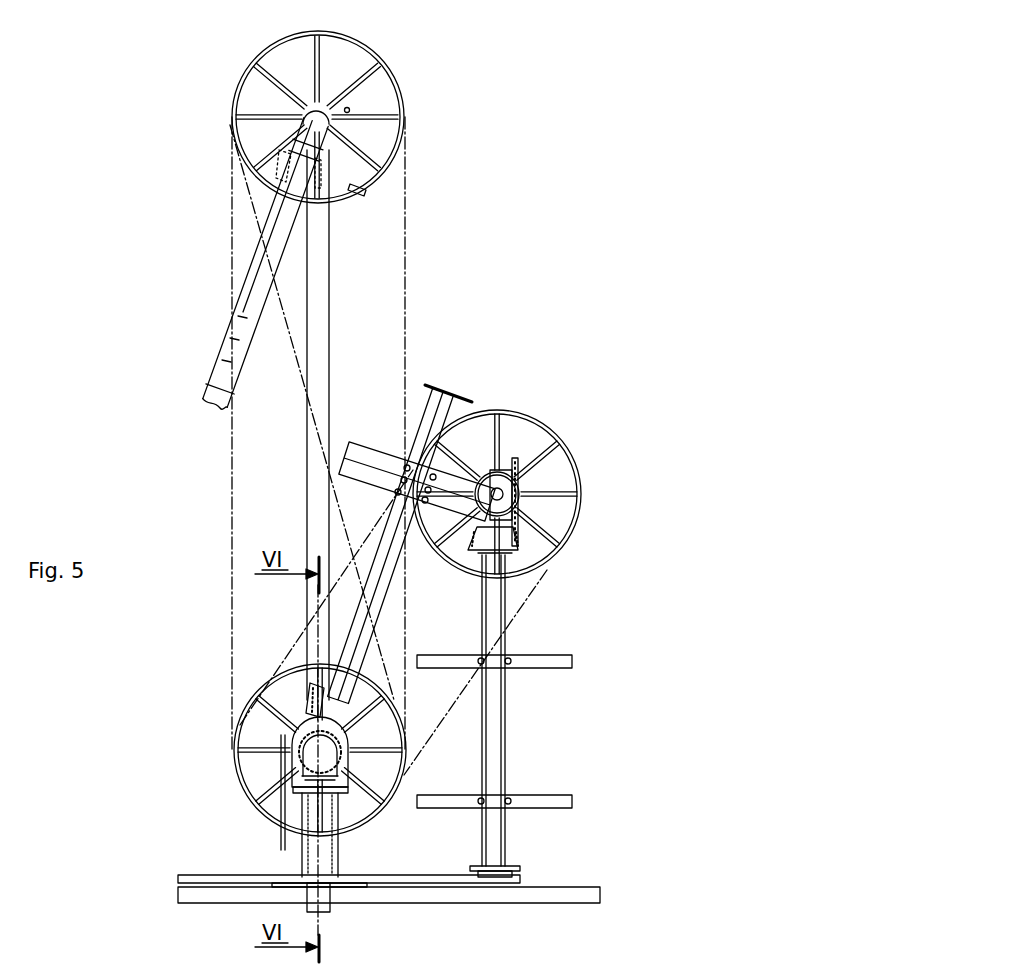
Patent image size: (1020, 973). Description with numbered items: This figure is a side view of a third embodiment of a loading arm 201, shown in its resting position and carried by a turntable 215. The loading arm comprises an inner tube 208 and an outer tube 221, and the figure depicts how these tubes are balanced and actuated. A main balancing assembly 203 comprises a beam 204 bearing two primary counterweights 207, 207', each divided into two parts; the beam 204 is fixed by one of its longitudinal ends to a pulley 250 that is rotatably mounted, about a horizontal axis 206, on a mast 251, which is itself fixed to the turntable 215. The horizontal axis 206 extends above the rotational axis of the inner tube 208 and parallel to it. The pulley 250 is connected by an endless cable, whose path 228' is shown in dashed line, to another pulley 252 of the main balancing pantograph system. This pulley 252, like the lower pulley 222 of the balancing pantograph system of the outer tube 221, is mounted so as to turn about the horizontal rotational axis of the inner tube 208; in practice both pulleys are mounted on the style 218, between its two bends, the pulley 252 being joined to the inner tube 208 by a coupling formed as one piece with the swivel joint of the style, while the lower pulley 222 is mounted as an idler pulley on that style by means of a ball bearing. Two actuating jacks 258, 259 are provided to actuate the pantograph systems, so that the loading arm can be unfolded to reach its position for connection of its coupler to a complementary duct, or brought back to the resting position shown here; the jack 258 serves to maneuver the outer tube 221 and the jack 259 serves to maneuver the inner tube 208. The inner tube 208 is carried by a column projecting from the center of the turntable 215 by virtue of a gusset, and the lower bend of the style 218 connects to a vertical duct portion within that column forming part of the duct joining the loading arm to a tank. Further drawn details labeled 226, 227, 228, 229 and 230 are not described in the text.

The loading arm 201 is at (163, 387).
The main balancing assembly 203 is at (638, 537).
The beam 204 is at (505, 725).
The horizontal axis 206 is at (495, 470).
The primary counterweight 207 is at (539, 792).
The primary counterweight 207' is at (540, 652).
The inner tube 208 is at (322, 288).
The turntable 215 is at (600, 890).
The style "50" 218 is at (355, 972).
The outer tube 221 is at (251, 300).
The lower pulley 222 is at (275, 833).
The strut 226 is at (450, 397).
The bar 227 is at (377, 447).
The belt run 228 is at (184, 433).
The cable path 228' is at (475, 681).
The upper wheel 229 is at (398, 89).
The collar 230 is at (289, 132).
The pulley 250 is at (567, 467).
The mast 251 is at (522, 869).
The pulley 252 is at (287, 800).
The actuating jack 258 is at (293, 767).
The actuating jack 259 is at (539, 463).